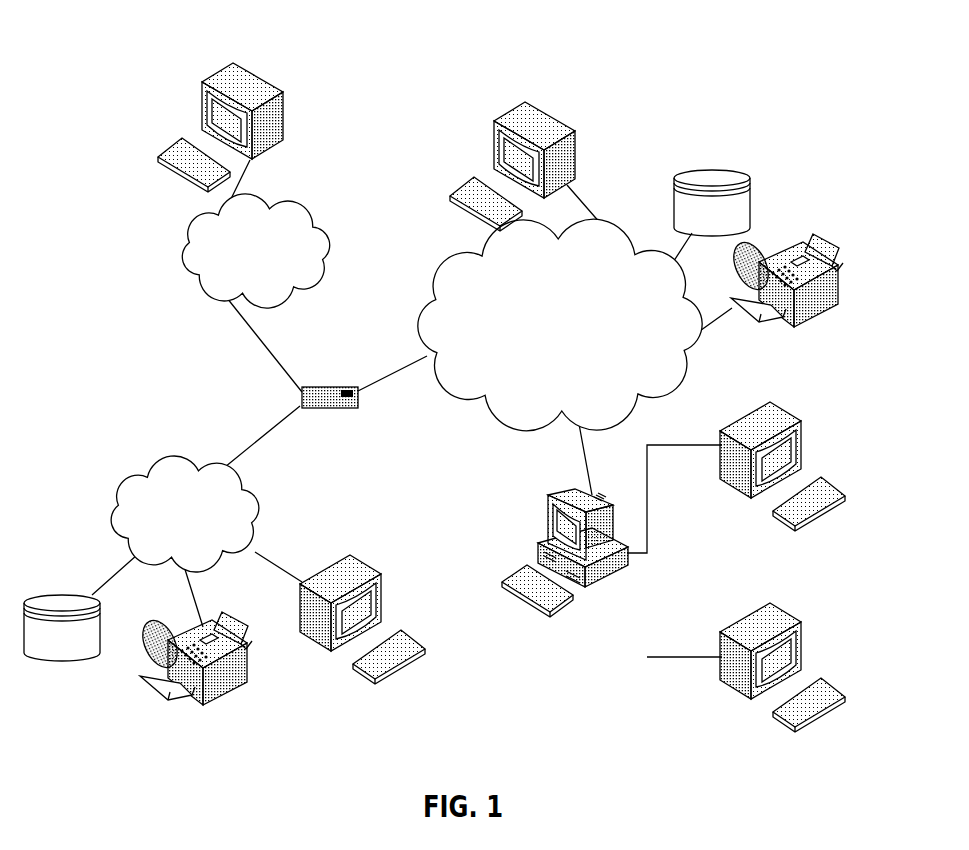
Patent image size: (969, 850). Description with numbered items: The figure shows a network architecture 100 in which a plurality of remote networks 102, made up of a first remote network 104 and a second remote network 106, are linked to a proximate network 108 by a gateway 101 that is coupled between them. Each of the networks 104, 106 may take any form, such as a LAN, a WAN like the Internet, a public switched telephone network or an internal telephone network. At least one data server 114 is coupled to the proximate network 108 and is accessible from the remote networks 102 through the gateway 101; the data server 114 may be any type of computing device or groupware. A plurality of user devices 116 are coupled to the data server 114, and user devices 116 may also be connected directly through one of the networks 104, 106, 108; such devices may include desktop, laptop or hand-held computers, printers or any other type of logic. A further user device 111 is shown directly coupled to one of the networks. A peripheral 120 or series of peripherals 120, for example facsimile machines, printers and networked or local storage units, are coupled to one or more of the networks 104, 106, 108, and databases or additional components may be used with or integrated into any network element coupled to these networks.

The architecture 100 is at (134, 47).
The gateway 101 is at (314, 387).
The remote networks 102 is at (163, 313).
The first remote network 104 is at (118, 490).
The second remote network 106 is at (323, 223).
The proximate network 108 is at (661, 389).
The user device 111 is at (574, 132).
The data server 114 is at (547, 509).
The user devices 116 is at (284, 100).
The peripheral 120 is at (750, 179).